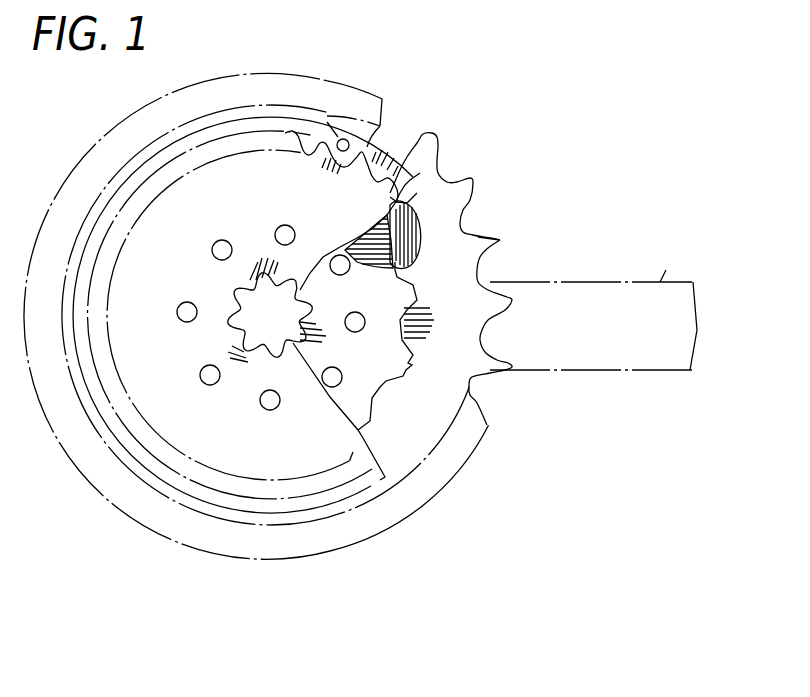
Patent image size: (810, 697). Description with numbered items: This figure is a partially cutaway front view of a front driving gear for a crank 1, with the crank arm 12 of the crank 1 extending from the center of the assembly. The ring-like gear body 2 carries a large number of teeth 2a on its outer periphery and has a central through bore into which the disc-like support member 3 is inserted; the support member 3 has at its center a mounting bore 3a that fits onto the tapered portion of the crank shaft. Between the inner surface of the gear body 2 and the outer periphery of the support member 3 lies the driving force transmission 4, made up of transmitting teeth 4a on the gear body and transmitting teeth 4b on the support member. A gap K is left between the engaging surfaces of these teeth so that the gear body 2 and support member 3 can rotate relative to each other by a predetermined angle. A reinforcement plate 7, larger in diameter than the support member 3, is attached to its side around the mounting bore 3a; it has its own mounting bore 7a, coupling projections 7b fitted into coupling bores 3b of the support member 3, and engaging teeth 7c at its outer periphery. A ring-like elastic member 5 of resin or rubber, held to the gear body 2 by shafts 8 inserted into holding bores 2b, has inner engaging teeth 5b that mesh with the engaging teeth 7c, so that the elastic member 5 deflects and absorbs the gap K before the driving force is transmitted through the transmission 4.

The rod 1 is at (663, 290).
The gear body 2 is at (487, 276).
The teeth 2a is at (500, 240).
The holding bores 2b is at (348, 138).
The support member 3 is at (411, 366).
The mounting bore 3a is at (312, 308).
The coupling bores 3b is at (338, 385).
The driving force transmission 4 is at (562, 157).
The transmitting teeth 4a is at (421, 256).
The transmitting teeth 4b is at (385, 222).
The elastic member 5 is at (367, 147).
The engaging teeth 5b is at (437, 200).
The reinforcement plate 7 is at (345, 455).
The mounting bore 7a is at (259, 348).
The coupling projections 7b is at (270, 410).
The engaging teeth 7c is at (390, 197).
The shafts 8 is at (327, 122).
The crank arm 12 is at (612, 372).
The gap K is at (390, 257).